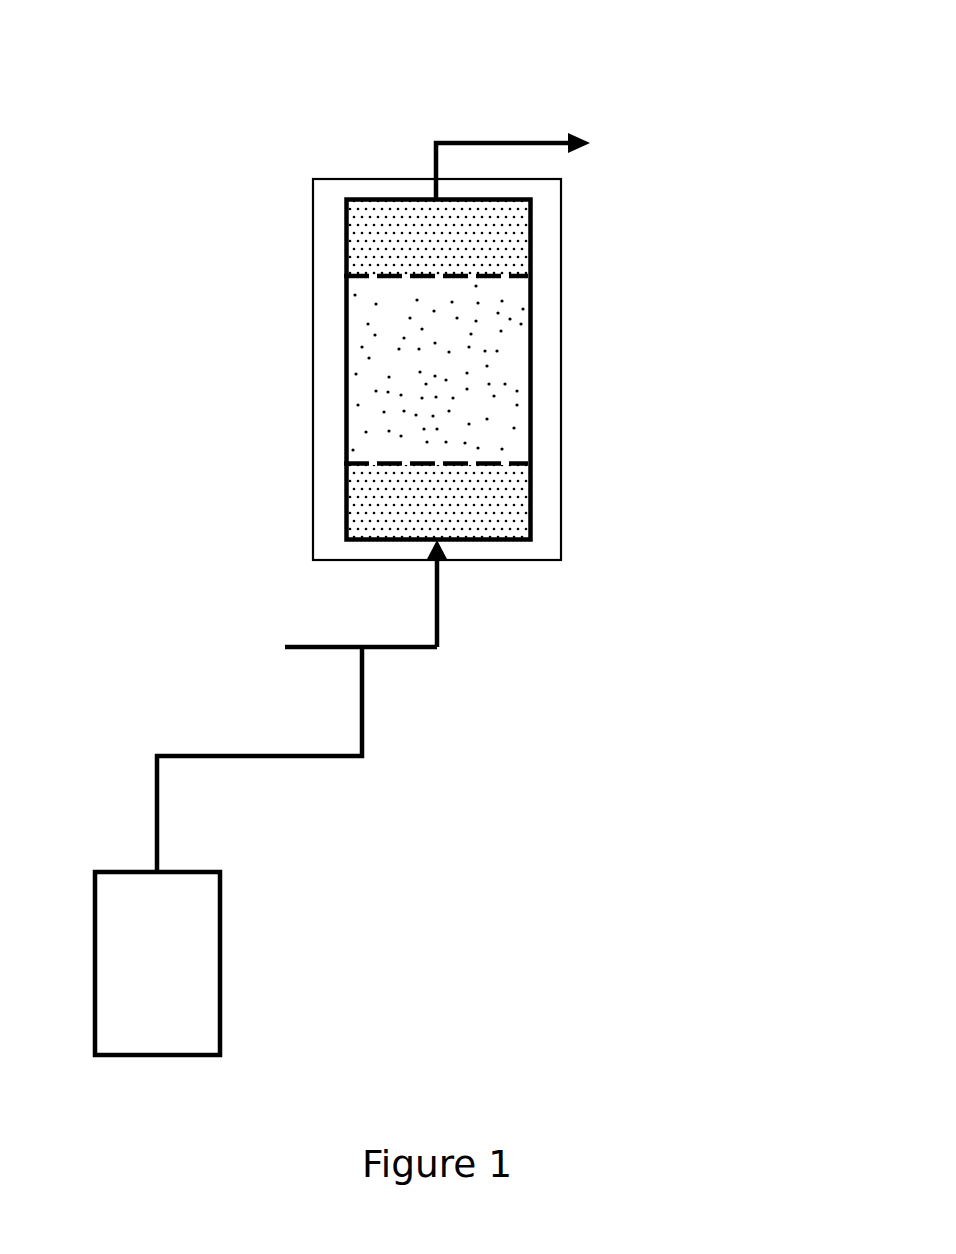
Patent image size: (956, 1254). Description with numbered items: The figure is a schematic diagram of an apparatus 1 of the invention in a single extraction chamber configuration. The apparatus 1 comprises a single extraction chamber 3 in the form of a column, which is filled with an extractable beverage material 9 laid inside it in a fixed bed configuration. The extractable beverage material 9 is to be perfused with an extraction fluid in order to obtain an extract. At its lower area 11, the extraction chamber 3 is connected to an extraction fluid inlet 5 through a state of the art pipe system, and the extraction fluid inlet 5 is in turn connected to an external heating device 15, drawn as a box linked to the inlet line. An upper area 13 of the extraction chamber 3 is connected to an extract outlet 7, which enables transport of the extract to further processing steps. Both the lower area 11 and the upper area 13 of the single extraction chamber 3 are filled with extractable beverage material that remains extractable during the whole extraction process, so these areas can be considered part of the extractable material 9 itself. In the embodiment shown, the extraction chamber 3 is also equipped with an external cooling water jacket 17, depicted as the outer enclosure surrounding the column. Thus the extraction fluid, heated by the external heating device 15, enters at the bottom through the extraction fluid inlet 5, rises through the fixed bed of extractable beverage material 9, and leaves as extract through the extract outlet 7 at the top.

The apparatus 1 is at (718, 118).
The single extraction chamber 3 is at (532, 317).
The extraction fluid inlet 5 is at (437, 597).
The extract outlet 7 is at (513, 141).
The extractable beverage material 9 is at (393, 387).
The lower area 11 is at (397, 493).
The upper area 13 is at (392, 228).
The external heating device 15 is at (178, 955).
The external cooling water jacket 17 is at (545, 501).